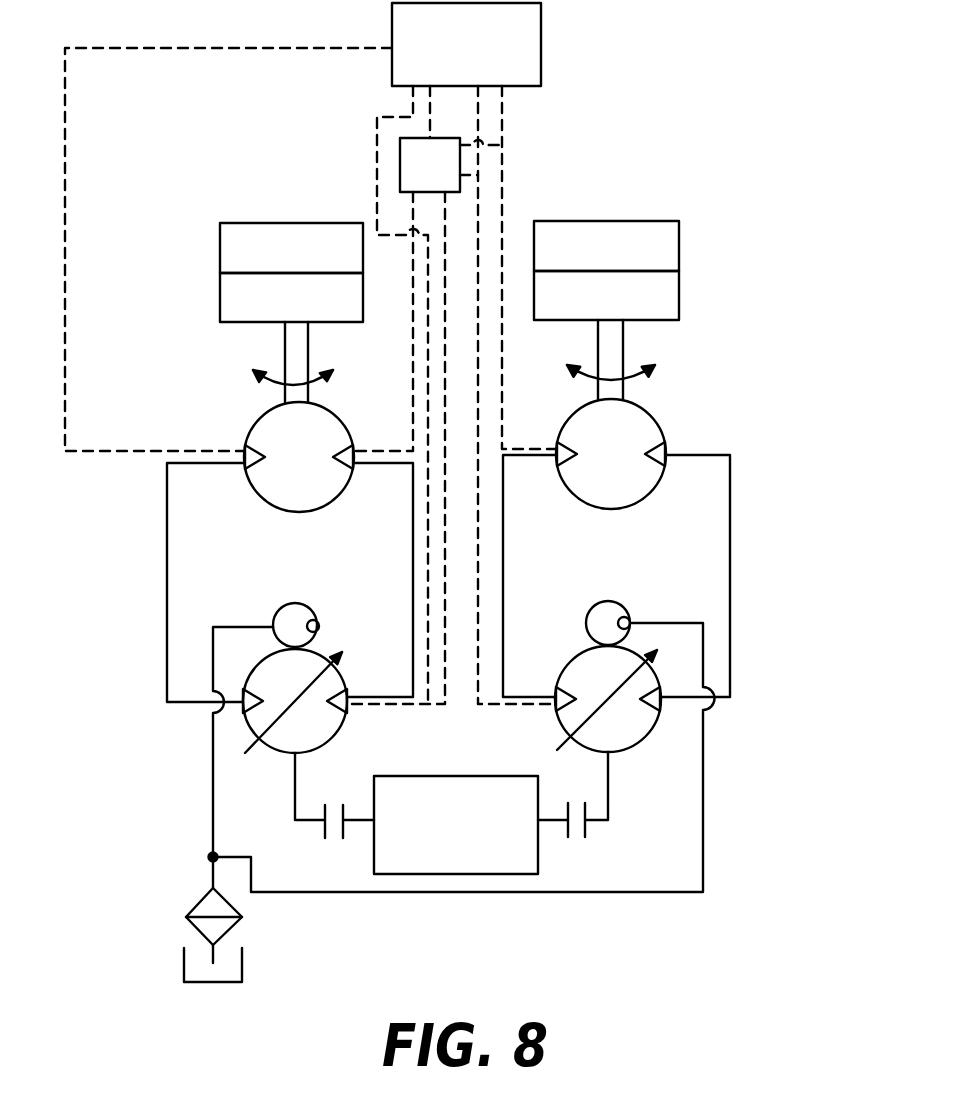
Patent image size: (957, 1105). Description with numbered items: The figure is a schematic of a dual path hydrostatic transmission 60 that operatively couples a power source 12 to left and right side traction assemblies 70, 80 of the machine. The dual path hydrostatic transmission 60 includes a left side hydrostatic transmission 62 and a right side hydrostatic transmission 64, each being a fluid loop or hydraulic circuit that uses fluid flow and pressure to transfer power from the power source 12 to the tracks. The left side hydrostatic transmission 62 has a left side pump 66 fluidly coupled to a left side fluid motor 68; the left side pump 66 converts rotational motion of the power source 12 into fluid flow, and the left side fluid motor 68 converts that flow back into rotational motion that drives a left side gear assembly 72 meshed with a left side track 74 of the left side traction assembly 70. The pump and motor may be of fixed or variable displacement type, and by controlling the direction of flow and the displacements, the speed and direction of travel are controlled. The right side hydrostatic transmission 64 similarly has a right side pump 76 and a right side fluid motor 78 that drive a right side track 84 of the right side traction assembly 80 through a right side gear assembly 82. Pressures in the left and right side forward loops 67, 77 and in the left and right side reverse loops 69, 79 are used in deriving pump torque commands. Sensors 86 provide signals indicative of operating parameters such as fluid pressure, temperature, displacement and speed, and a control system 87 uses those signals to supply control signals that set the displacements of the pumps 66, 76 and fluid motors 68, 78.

The power source 12 is at (440, 836).
The dual path hydrostatic transmission 60 is at (173, 292).
The left side hydrostatic transmission 62 is at (147, 793).
The right side hydrostatic transmission 64 is at (735, 758).
The left side pump 66 is at (277, 753).
The left side forward loop 67 is at (167, 515).
The left side fluid motor 68 is at (250, 427).
The left side reverse loop 69 is at (413, 557).
The left side traction assembly 70 is at (291, 237).
The left side gear assembly 72 is at (276, 312).
The left side track 74 is at (276, 263).
The right side pump 76 is at (637, 750).
The right side forward loop 77 is at (503, 523).
The right side fluid motor 78 is at (660, 425).
The right side reverse loop 79 is at (730, 498).
The right side traction assembly 80 is at (606, 231).
The right side gear assembly 82 is at (591, 312).
The right side track 84 is at (591, 261).
The sensors 86 is at (414, 180).
The control system 87 is at (450, 58).